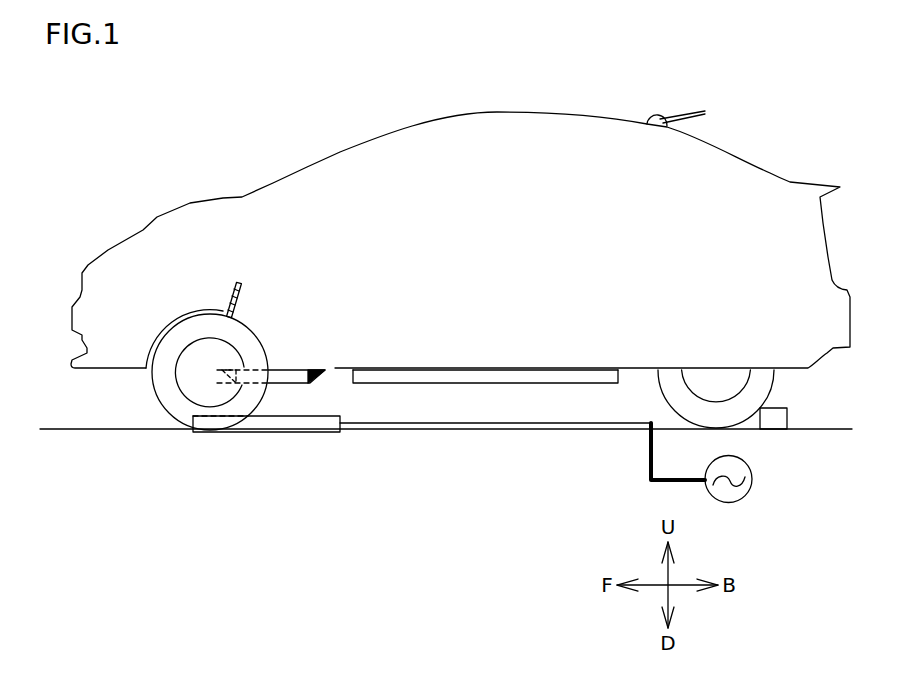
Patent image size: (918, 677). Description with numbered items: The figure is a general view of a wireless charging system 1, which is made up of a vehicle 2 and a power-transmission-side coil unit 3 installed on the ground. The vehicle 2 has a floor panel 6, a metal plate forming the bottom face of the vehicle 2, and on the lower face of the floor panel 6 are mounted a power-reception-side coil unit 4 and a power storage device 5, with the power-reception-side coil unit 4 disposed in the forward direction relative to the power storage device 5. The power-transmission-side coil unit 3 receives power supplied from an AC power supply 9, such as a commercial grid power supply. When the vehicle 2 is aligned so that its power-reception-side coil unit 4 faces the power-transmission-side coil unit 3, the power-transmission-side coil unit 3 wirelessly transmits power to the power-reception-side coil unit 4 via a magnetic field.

The wireless charging system 1 is at (270, 132).
The vehicle 2 is at (502, 112).
The power-transmission-side coil unit 3 is at (243, 434).
The power-reception-side coil unit 4 is at (287, 380).
The power storage device 5 is at (577, 375).
The floor panel 6 is at (397, 371).
The AC power supply 9 is at (753, 478).